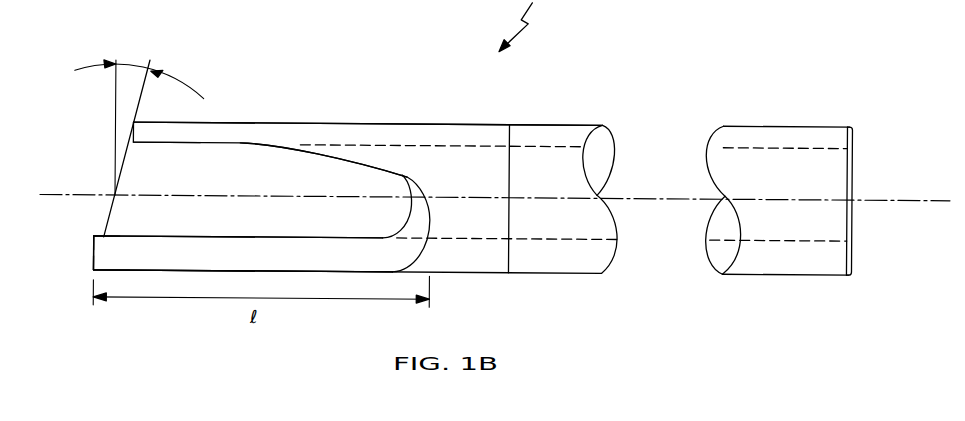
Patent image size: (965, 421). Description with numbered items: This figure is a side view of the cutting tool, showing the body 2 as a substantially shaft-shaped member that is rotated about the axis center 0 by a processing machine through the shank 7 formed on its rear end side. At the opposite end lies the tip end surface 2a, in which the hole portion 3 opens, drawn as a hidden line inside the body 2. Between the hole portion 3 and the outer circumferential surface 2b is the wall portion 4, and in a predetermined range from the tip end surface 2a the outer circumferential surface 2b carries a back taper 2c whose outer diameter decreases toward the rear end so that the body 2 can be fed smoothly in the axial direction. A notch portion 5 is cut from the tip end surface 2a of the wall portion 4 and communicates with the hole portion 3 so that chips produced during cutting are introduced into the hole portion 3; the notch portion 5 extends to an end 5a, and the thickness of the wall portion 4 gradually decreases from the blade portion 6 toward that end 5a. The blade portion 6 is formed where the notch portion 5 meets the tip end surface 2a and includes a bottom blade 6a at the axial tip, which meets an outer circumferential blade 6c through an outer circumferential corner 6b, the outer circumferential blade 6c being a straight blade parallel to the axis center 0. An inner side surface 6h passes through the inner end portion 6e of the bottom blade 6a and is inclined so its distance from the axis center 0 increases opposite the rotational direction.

The axis center 0 is at (906, 198).
The body 2 is at (498, 114).
The tip end surface 2a is at (118, 152).
The outer circumferential surface 2b is at (552, 123).
The back taper 2c is at (363, 122).
The hole portion 3 is at (417, 152).
The wall portion 4 is at (210, 157).
The notch portion 5 is at (333, 150).
The end of notch portion 5a is at (177, 144).
The blade portion 6 is at (60, 315).
The bottom blade 6a is at (93, 252).
The outer circumferential corner 6b is at (92, 275).
The outer circumferential blade 6c is at (132, 270).
The inner end portion 6e is at (93, 236).
The inner side surface 6h is at (127, 236).
The shank 7 is at (828, 123).